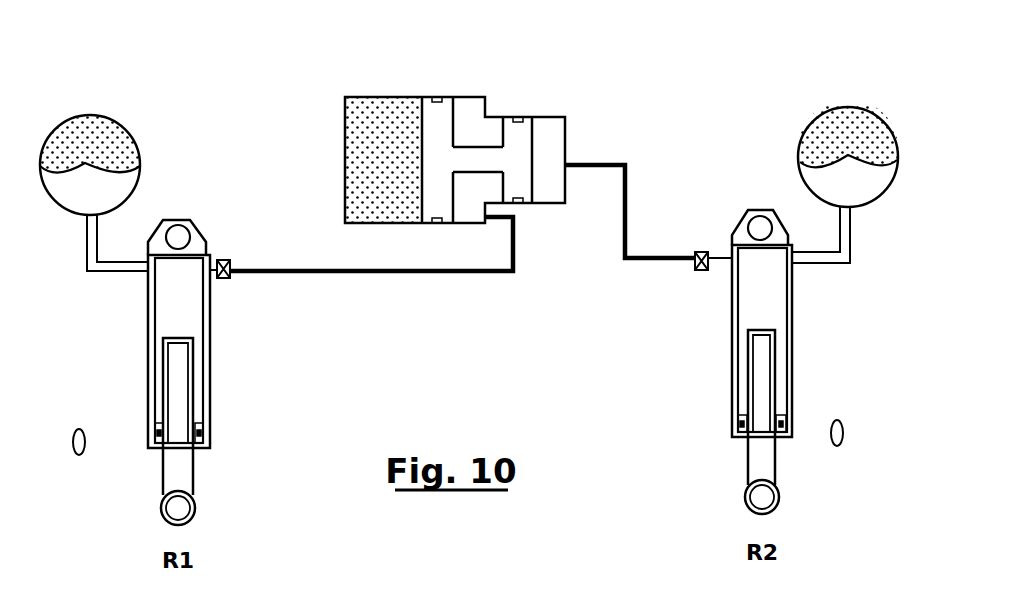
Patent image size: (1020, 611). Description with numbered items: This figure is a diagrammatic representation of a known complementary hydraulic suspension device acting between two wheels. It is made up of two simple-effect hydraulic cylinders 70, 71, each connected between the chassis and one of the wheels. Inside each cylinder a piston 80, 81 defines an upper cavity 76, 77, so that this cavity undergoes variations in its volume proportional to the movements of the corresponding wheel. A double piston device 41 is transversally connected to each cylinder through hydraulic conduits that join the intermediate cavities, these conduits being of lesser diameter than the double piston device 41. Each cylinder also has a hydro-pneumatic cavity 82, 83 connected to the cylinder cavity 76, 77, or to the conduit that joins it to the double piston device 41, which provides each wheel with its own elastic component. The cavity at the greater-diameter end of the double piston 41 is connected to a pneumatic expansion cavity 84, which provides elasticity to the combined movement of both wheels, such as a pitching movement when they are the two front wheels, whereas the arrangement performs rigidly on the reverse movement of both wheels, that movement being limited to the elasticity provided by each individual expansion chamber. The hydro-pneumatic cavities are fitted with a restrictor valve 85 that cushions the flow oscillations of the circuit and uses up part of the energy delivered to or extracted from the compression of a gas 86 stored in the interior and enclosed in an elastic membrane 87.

The double piston device 41 is at (345, 127).
The pneumatic expansion cavity 84 is at (395, 130).
The simple-effect hydraulic cylinder 70 is at (195, 372).
The upper cavity 76 is at (182, 310).
The piston 80 is at (183, 363).
The simple-effect hydraulic cylinder 71 is at (736, 362).
The upper cavity 77 is at (753, 303).
The piston 81 is at (757, 362).
The hydro-pneumatic cavity 82 is at (91, 108).
The restrictor valve 85 is at (91, 205).
The hydro-pneumatic cavity 83 is at (842, 100).
The gas 86 is at (842, 133).
The elastic membrane 87 is at (877, 155).